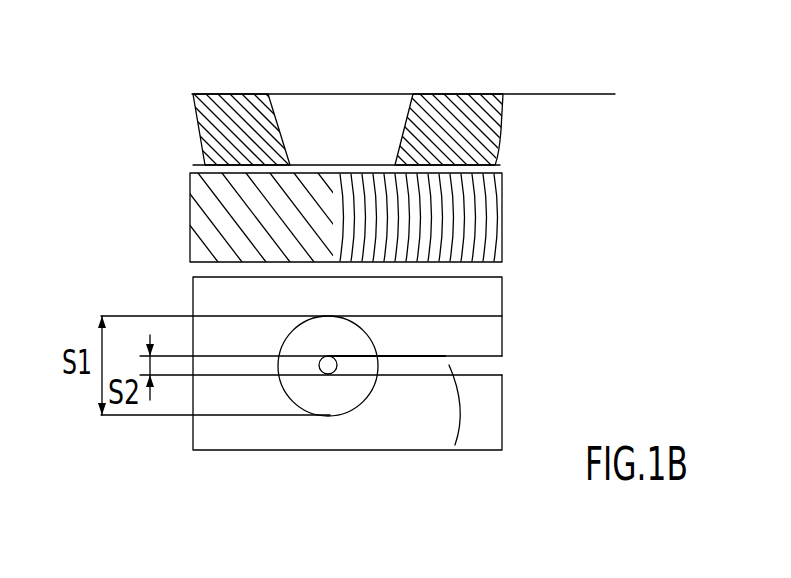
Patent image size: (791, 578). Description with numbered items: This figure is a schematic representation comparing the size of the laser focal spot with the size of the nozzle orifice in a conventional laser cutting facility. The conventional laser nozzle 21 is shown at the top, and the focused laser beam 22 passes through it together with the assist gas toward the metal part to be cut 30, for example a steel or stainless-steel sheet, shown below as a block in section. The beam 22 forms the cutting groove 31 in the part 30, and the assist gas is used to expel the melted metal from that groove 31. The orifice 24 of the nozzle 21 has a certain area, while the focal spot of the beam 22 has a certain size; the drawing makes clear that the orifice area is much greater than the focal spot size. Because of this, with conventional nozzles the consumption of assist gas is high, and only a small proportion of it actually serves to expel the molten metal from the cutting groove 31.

The laser nozzle 21 is at (382, 132).
The laser beam 22 is at (337, 365).
The nozzle orifice 24 is at (385, 328).
The metal part to be cut 30 is at (232, 200).
The cutting groove 31 is at (473, 218).